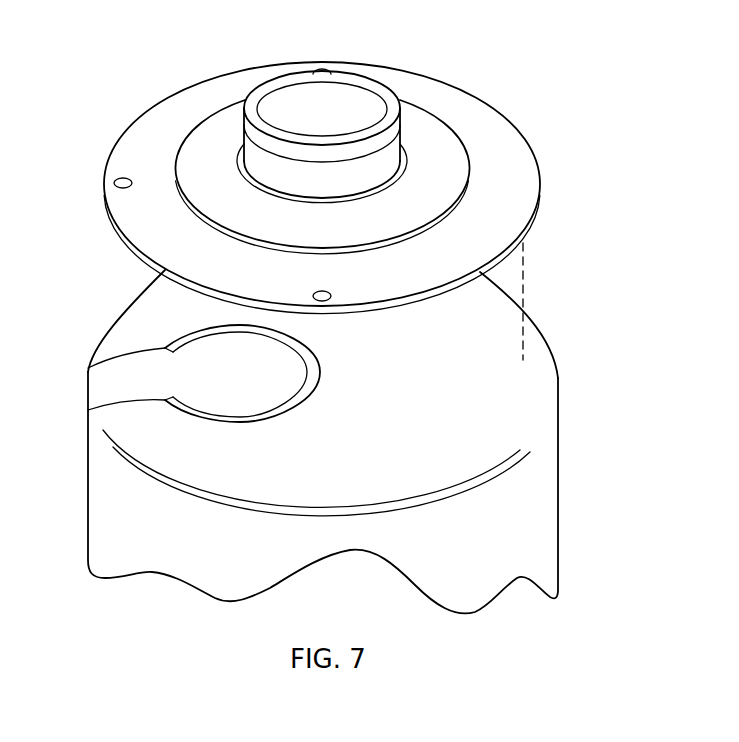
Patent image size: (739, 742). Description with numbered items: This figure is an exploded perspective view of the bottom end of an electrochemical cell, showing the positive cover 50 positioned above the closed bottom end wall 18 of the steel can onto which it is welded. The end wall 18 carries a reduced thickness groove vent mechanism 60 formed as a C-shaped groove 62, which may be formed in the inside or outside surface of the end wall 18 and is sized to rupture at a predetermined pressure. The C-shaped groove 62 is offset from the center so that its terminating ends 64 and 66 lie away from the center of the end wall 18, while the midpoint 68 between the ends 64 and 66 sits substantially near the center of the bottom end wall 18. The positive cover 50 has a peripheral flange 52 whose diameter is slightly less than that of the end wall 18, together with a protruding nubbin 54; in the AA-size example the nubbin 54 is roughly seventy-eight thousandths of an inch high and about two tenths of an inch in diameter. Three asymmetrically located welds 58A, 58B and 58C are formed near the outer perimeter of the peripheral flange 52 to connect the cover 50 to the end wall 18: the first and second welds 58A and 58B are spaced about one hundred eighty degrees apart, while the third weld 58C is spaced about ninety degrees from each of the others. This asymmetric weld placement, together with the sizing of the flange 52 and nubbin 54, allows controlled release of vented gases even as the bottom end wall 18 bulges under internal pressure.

The closed bottom end wall 18 is at (533, 342).
The positive cover 50 is at (337, 176).
The peripheral flange 52 is at (512, 145).
The nubbin 54 is at (362, 103).
The first weld 58A is at (328, 292).
The second weld 58B is at (323, 67).
The third weld 58C is at (121, 176).
The C-shaped groove vent mechanism 60 is at (225, 357).
The C-shaped groove 62 is at (320, 360).
The terminating end of the groove 64 is at (88, 388).
The terminating end of the groove 66 is at (147, 350).
The midpoint of the groove 68 is at (322, 378).